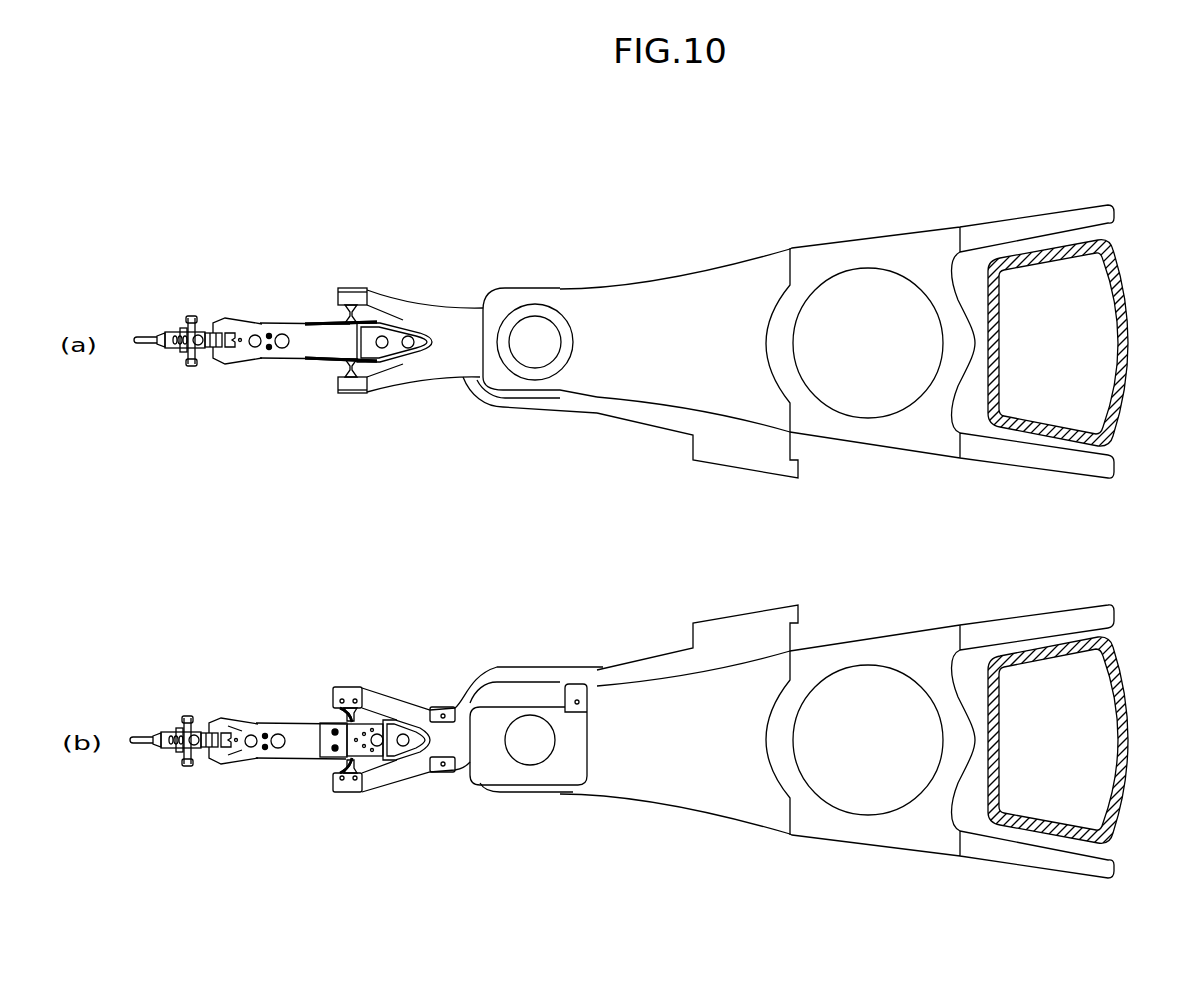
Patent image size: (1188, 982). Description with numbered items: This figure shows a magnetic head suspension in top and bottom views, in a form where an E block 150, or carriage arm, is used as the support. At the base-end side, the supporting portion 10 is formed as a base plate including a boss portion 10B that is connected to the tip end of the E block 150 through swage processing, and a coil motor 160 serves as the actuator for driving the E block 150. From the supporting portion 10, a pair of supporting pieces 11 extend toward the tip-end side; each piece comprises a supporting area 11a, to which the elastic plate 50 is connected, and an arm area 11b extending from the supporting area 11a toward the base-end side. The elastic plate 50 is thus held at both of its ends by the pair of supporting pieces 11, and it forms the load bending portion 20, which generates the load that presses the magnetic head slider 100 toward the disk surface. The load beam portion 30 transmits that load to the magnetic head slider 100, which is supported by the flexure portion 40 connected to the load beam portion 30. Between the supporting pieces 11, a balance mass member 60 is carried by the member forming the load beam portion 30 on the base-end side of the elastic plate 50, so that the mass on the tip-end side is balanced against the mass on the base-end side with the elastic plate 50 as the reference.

The supporting portion 10 is at (507, 514).
The boss portion 10B is at (535, 330).
The supporting pieces 11 is at (468, 530).
The supporting areas 11a is at (347, 289).
The arm areas 11b is at (408, 306).
The load bending portion 20 is at (341, 547).
The load beam portion 30 is at (302, 348).
The flexure portion 40 is at (232, 362).
The elastic plate 50 is at (329, 307).
The balance mass member 60 is at (397, 348).
The magnetic head slider 100 is at (196, 744).
The E block 150 is at (681, 242).
The coil motor 160 is at (1130, 396).